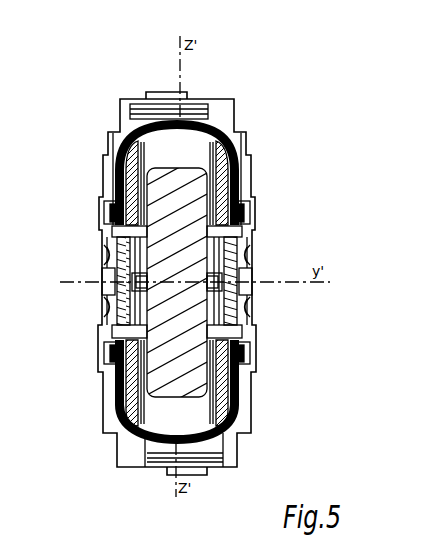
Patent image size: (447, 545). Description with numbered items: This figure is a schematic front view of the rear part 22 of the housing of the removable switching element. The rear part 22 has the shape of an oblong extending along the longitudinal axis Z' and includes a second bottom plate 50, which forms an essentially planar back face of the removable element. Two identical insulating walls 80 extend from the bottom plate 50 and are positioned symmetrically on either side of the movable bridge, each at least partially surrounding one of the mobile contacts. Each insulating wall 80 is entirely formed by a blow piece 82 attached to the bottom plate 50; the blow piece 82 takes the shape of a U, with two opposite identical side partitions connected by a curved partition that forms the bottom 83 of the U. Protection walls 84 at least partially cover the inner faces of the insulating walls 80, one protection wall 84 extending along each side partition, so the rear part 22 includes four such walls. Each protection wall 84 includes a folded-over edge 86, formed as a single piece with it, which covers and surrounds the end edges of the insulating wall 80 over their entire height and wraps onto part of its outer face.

The rear part 22 is at (217, 252).
The second bottom plate 50 is at (115, 132).
The insulating walls 80 is at (196, 292).
The blow piece 82 is at (240, 120).
The bottom 83 is at (197, 267).
The protection walls 84 is at (238, 176).
The folded-over edge 86 is at (256, 213).